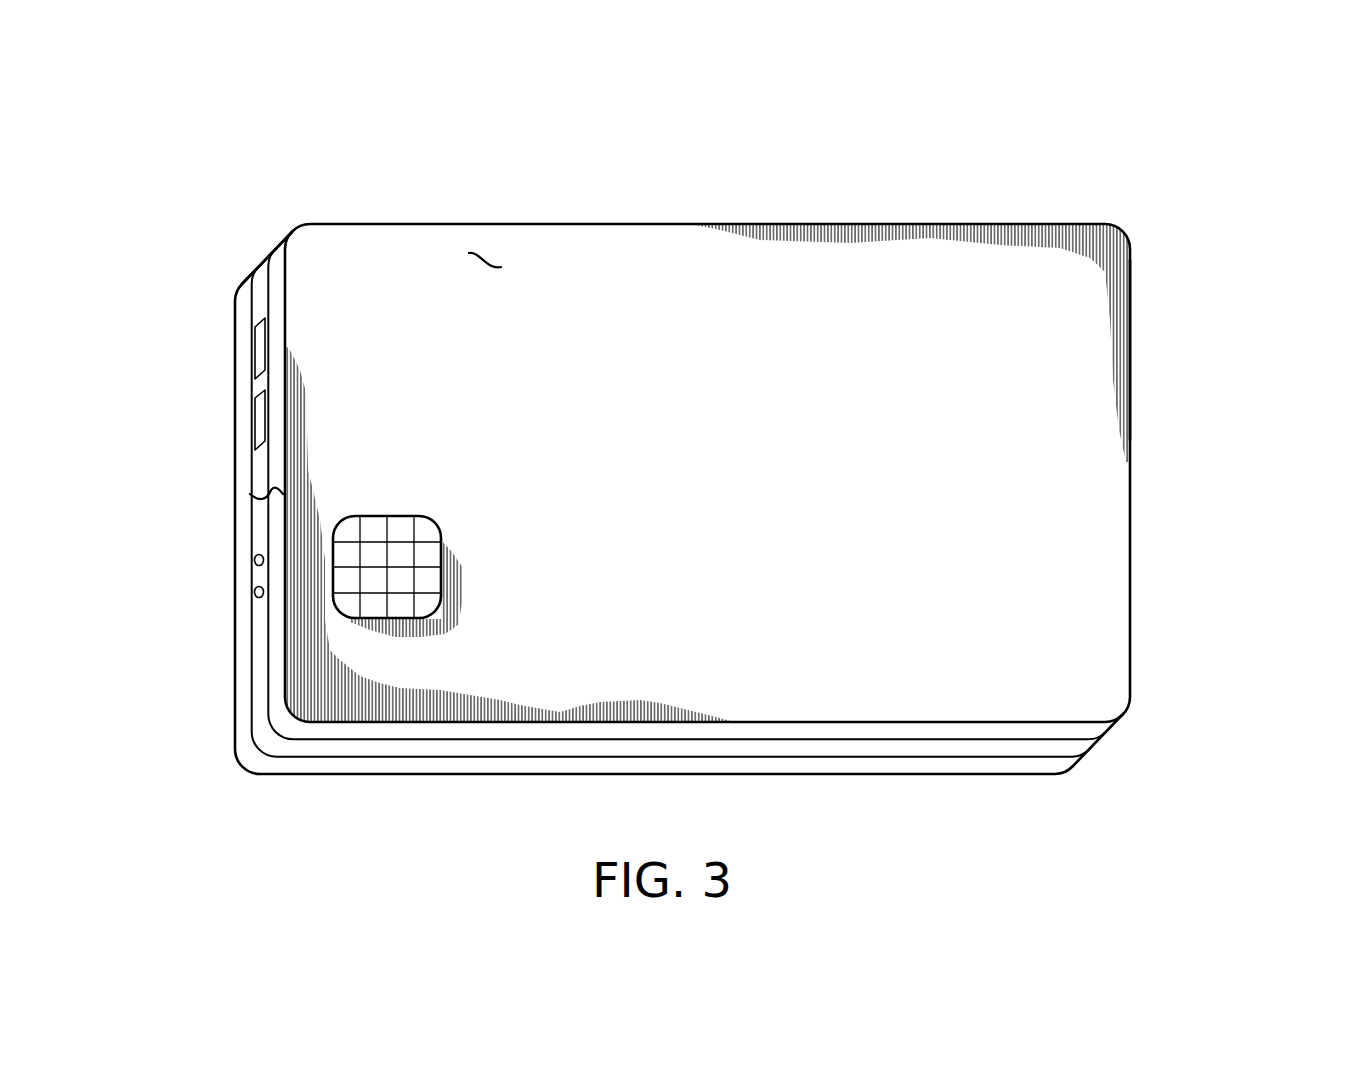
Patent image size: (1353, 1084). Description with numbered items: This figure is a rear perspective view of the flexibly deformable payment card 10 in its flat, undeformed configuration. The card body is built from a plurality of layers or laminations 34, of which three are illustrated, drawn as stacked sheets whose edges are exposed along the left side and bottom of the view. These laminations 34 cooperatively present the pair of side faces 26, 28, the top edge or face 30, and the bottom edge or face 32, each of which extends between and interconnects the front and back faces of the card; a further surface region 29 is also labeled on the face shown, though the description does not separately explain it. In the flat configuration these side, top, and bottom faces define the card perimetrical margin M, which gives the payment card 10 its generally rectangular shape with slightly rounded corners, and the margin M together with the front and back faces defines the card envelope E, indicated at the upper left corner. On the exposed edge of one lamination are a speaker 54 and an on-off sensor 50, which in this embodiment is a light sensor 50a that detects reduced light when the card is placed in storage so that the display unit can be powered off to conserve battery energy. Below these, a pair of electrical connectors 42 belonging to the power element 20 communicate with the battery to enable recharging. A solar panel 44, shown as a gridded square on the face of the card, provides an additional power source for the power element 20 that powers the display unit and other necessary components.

The payment card 10 is at (702, 499).
The power element 20 is at (447, 515).
The side face 26 is at (1131, 505).
The side face 28 is at (258, 490).
The front surface 29 is at (495, 262).
The top edge or face 30 is at (690, 224).
The bottom edge or face 32 is at (786, 746).
The laminations 34 is at (679, 567).
The electrical connectors 42 is at (254, 560).
The solar panel 44 is at (375, 528).
The on-off sensor 50 is at (175, 405).
The light sensor 50a is at (262, 412).
The speaker 54 is at (262, 348).
The card envelope E is at (280, 230).
The card perimetrical margin M is at (1131, 315).